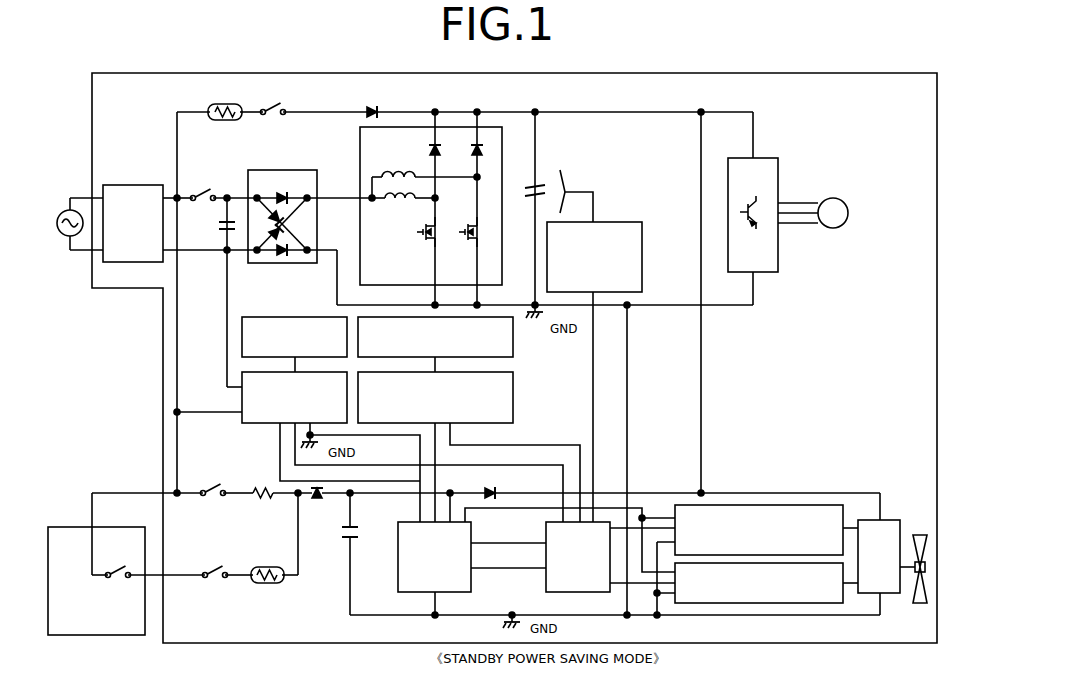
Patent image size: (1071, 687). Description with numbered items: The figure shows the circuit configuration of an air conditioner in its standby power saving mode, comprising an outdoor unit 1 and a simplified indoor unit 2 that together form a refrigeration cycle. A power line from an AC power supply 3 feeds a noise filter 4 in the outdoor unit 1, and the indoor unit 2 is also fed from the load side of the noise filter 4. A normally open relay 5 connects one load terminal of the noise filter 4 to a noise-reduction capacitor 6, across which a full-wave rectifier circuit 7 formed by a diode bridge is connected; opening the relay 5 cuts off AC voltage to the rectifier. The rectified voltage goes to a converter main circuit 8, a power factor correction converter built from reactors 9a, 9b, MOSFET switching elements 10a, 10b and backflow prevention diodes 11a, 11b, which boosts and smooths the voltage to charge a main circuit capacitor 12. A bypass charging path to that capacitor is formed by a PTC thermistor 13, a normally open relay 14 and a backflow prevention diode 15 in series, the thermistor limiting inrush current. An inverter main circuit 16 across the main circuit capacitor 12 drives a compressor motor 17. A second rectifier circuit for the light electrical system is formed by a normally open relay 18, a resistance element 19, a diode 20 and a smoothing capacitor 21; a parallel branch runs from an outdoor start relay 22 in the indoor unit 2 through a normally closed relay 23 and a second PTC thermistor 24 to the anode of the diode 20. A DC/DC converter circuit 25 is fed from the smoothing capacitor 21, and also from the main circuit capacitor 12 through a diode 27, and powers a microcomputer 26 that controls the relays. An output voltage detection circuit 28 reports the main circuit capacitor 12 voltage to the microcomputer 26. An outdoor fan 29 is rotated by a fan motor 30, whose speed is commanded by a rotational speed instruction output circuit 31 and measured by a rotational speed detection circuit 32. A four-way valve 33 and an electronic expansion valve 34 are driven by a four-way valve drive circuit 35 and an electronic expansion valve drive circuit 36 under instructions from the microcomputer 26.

The outdoor unit 1 is at (937, 246).
The indoor unit 2 is at (76, 527).
The AC power supply 3 is at (62, 212).
The noise filter 4 is at (140, 185).
The relay 5 is at (202, 192).
The capacitor 6 is at (220, 228).
The full-wave rectifier circuit 7 is at (286, 170).
The converter main circuit 8 is at (360, 146).
The reactor 9a is at (400, 206).
The reactor 9b is at (408, 171).
The switching element 10a is at (420, 244).
The switching element 10b is at (462, 244).
The backflow prevention diode 11a is at (440, 151).
The backflow prevention diode 11b is at (473, 158).
The main circuit capacitor 12 is at (530, 187).
The PTC thermistor 13 is at (219, 106).
The relay 14 is at (277, 105).
The backflow prevention diode 15 is at (370, 107).
The inverter main circuit 16 is at (762, 158).
The compressor motor 17 is at (837, 199).
The relay 18 is at (210, 486).
The resistance element 19 is at (260, 488).
The diode 20 is at (319, 499).
The smoothing capacitor 21 is at (344, 537).
The outdoor start relay 22 is at (118, 567).
The relay 23 is at (214, 569).
The PTC thermistor 24 is at (264, 567).
The DC/DC converter circuit 25 is at (398, 583).
The microcomputer 26 is at (546, 583).
The diode 27 is at (494, 487).
The output voltage detection circuit 28 is at (638, 222).
The outdoor fan 29 is at (921, 535).
The fan motor 30 is at (892, 518).
The rotational speed instruction output circuit 31 is at (814, 505).
The rotational speed detection circuit 32 is at (777, 603).
The four-way valve 33 is at (296, 317).
The electronic expansion valve 34 is at (514, 344).
The four-way valve drive circuit 35 is at (242, 398).
The electronic expansion valve drive circuit 36 is at (514, 398).